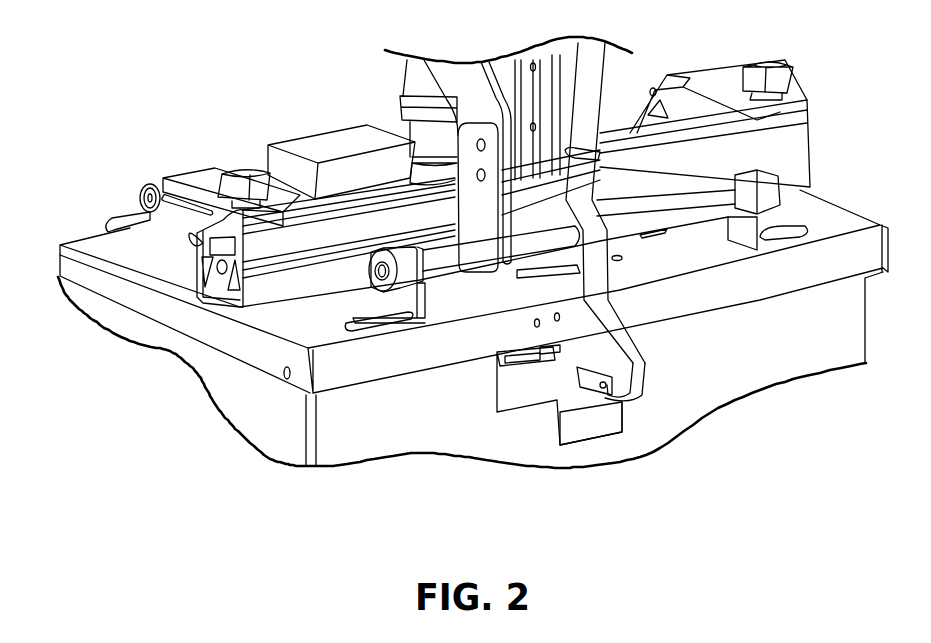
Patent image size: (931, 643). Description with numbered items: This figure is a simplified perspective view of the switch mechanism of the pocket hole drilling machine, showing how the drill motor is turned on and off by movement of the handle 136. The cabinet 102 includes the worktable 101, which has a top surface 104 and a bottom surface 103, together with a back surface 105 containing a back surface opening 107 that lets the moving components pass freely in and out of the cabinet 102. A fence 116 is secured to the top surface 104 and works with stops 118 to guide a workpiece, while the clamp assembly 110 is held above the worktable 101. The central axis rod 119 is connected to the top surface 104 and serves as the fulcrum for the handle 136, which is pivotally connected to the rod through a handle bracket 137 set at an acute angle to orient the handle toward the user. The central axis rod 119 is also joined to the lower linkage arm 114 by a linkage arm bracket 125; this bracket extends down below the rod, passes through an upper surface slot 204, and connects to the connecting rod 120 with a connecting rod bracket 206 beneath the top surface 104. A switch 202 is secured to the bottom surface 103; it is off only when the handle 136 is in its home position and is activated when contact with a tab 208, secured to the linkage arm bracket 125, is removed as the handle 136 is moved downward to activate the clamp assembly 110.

The clamp assembly 110 is at (352, 72).
The handle 136 is at (466, 80).
The lower linkage arm 114 is at (612, 66).
The stops 118 is at (722, 70).
The fence 116 is at (818, 158).
The linkage arm bracket 125 is at (585, 194).
The central axis rod 119 is at (690, 208).
The cabinet 102 is at (92, 232).
The top surface 104 is at (128, 260).
The worktable 101 is at (263, 333).
The bottom surface 103 is at (375, 383).
The handle bracket 137 is at (470, 213).
The upper surface slot 204 is at (550, 277).
The switch 202 is at (547, 367).
The connecting rod 120 is at (560, 378).
The connecting rod bracket 206 is at (595, 390).
The back surface opening 107 is at (600, 435).
The back surface 105 is at (672, 420).
The tab 208 is at (617, 340).